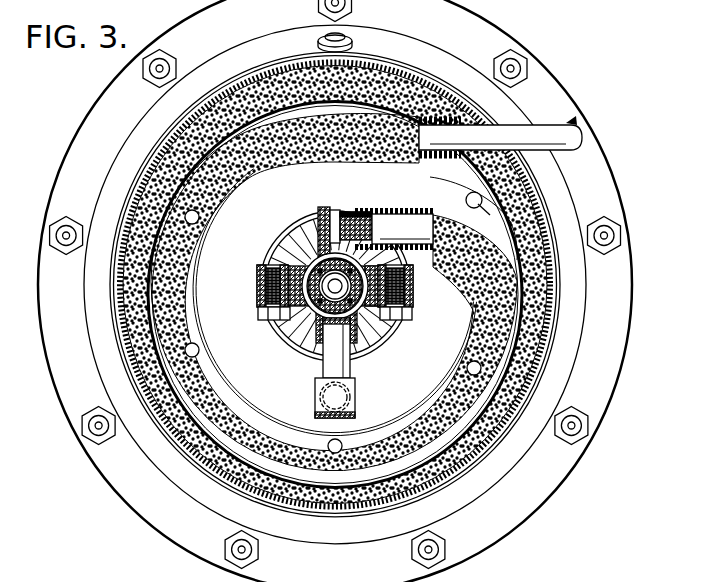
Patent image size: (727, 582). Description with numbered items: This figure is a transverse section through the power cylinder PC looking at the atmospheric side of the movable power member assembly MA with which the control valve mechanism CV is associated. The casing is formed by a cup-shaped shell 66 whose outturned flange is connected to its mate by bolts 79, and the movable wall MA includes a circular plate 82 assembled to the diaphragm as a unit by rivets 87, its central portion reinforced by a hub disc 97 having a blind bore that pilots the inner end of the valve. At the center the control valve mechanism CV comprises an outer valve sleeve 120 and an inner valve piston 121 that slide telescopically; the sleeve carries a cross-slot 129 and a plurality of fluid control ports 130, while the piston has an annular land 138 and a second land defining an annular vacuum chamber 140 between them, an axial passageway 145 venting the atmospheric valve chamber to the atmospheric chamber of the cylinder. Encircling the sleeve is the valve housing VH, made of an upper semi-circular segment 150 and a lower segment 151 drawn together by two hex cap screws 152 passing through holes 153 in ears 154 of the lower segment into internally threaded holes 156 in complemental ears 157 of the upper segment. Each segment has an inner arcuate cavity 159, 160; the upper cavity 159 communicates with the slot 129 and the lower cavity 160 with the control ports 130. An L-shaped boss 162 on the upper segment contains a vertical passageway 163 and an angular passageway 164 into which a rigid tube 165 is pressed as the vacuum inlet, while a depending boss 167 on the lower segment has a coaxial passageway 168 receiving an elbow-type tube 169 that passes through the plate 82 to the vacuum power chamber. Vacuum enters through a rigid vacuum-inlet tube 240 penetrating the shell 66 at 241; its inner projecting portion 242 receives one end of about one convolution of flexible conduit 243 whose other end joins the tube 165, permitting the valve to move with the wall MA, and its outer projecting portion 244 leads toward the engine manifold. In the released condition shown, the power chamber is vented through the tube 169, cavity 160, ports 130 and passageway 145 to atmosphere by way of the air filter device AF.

The cup-shaped shell 66 is at (553, 307).
The bolts 79 is at (586, 438).
The circular plate 82 is at (514, 233).
The rivets 87 is at (345, 322).
The hub disc 97 is at (384, 338).
The valve sleeve 120 is at (289, 262).
The valve piston 121 is at (414, 296).
The cross-slot 129 is at (336, 256).
The fluid control ports 130 is at (387, 322).
The annular land 138 is at (296, 252).
The annular vacuum chamber 140 is at (396, 270).
The axial passageway 145 is at (290, 318).
The upper semi-circular segment 150 is at (290, 240).
The lower semi-circular segment 151 is at (300, 332).
The hex cap screws 152 is at (262, 315).
The holes 153 is at (260, 291).
The lateral flanges or ears 154 is at (412, 314).
The internally threaded holes 156 is at (258, 272).
The lateral flanges or ears 157 is at (416, 283).
The arcuate cavity 159 is at (297, 222).
The arcuate cavity 160 is at (318, 336).
The L-shaped boss 162 is at (340, 207).
The vertical passageway 163 is at (333, 213).
The angular passageway 164 is at (374, 209).
The rigid tube 165 is at (405, 224).
The circular depending boss 167 is at (322, 368).
The coaxial passageway 168 is at (348, 360).
The elbow-type tube 169 is at (317, 413).
The vacuum-inlet tube 240 is at (578, 119).
The shell wall penetration 241 is at (527, 112).
The inner projecting portion 242 is at (466, 118).
The flexible conduit 243 is at (267, 123).
The outer projecting portion 244 is at (571, 136).
The air filter device AF is at (356, 34).
The power member assembly or movable wall MA is at (372, 84).
The power cylinder PC is at (147, 169).
The valve housing VH is at (307, 226).
The follow-up control valve mechanism CV is at (368, 343).